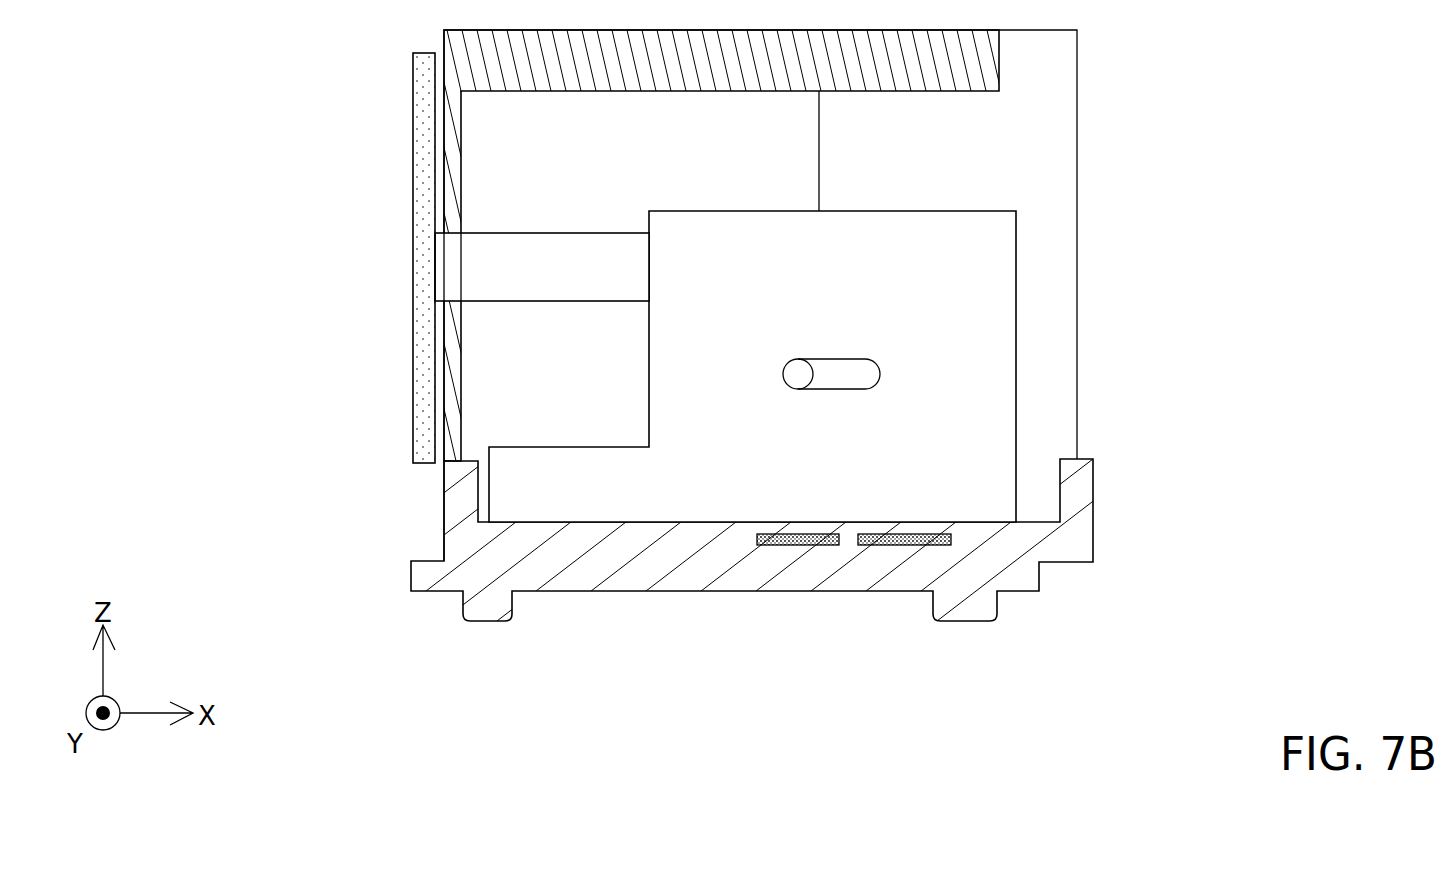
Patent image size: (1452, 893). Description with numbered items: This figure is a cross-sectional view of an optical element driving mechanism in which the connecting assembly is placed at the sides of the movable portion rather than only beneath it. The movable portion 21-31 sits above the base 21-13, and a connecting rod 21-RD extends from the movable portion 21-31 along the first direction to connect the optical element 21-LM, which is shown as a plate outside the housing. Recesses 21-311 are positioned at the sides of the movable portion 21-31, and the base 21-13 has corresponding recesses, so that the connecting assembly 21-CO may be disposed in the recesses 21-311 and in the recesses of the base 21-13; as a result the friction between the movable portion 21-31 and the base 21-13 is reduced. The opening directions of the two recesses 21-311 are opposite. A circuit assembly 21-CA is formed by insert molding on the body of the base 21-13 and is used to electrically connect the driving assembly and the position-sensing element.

The optical element 21-LM is at (424, 118).
The connecting rod 21-RD is at (510, 263).
The movable portion 21-31 is at (940, 274).
The recesses 21-311 is at (857, 372).
The connecting assembly 21-CO is at (798, 373).
The base 21-13 is at (654, 563).
The circuit assembly 21-CA is at (803, 545).